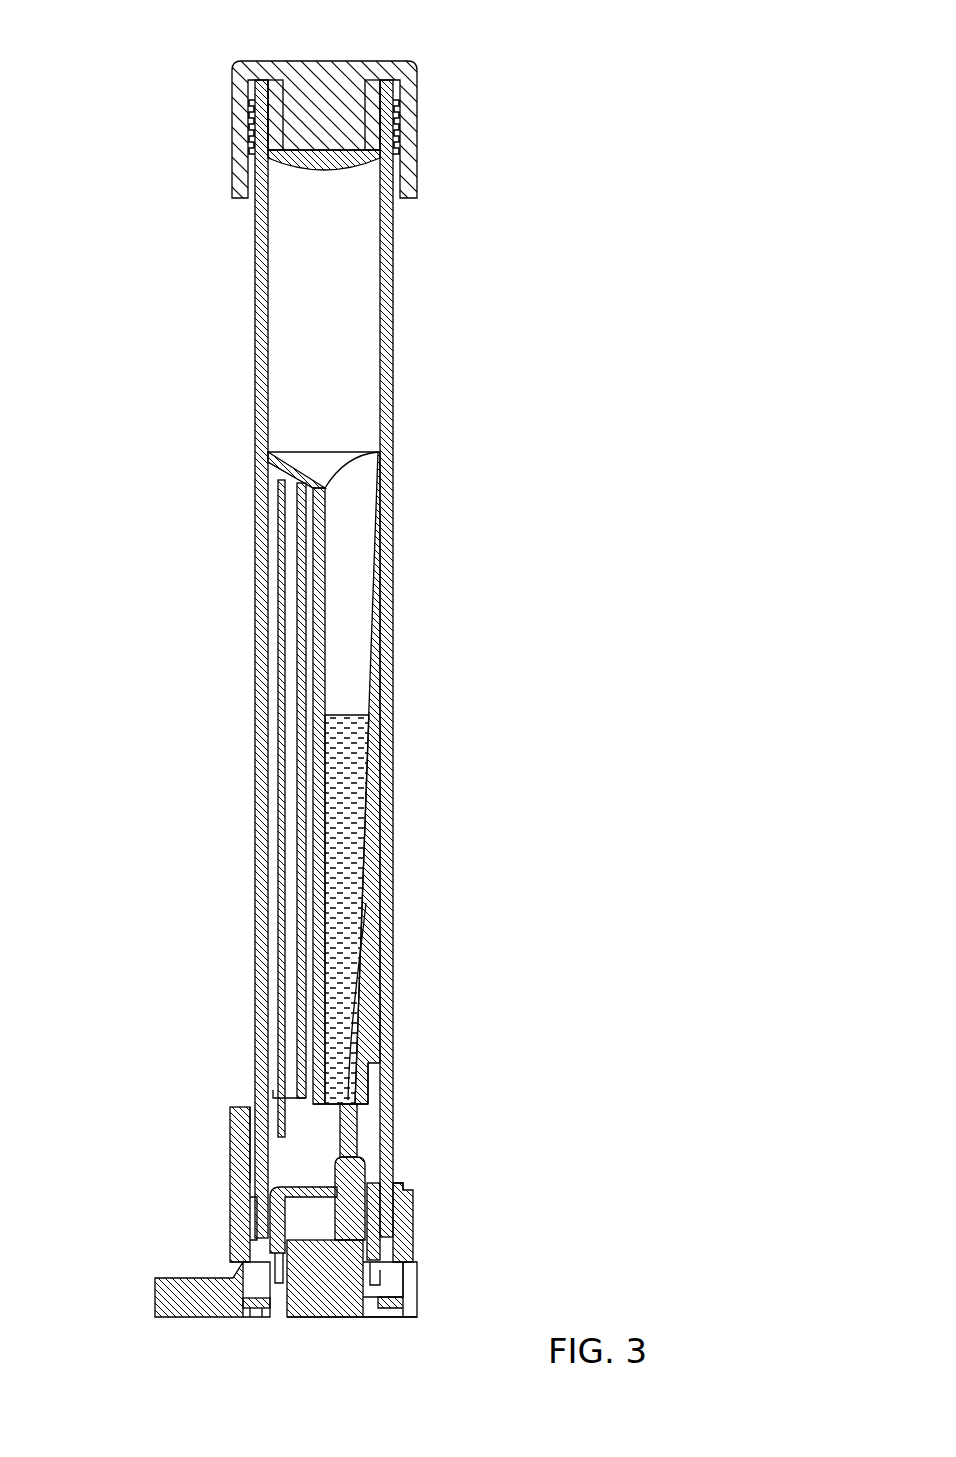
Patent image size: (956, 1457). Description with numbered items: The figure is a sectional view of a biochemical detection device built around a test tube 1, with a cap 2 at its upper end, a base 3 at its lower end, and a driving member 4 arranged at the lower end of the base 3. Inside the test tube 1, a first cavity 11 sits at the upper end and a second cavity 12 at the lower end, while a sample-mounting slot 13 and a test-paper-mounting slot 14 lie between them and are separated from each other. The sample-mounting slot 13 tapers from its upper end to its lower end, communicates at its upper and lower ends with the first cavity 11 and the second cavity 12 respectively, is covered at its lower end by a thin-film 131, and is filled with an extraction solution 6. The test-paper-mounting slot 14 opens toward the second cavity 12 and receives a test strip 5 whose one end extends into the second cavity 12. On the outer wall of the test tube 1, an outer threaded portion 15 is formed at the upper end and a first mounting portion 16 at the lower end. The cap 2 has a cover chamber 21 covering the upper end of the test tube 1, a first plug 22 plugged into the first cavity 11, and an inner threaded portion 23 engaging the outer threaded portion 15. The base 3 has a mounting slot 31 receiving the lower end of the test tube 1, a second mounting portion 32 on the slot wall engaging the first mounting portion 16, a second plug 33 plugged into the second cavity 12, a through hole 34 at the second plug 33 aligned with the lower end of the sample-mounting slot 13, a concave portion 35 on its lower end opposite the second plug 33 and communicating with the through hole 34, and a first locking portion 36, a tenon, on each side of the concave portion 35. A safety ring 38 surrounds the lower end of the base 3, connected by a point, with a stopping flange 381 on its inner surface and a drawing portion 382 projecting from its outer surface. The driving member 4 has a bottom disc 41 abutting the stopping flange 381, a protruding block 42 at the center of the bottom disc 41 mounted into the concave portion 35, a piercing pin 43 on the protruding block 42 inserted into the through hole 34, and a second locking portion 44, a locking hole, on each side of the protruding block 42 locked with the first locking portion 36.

The test tube 1 is at (260, 352).
The cap 2 is at (335, 95).
The base 3 is at (240, 1250).
The driving member 4 is at (398, 1330).
The test strip 5 is at (283, 680).
The extraction solution 6 is at (350, 805).
The first cavity 11 is at (385, 270).
The second cavity 12 is at (377, 1075).
The sample-mounting slot 13 is at (375, 598).
The test-paper-mounting slot 14 is at (267, 483).
The outer threaded portion 15 is at (393, 137).
The first mounting portion 16 is at (393, 1183).
The cover chamber 21 is at (253, 173).
The first plug 22 is at (280, 90).
The inner threaded portion 23 is at (253, 128).
The mounting slot 31 is at (235, 1215).
The second mounting portion 32 is at (250, 1180).
The second plug 33 is at (290, 1185).
The through hole 34 is at (372, 1190).
The concave portion 35 is at (410, 1245).
The first locking portion 36 is at (380, 1280).
The safety ring 38 is at (413, 1308).
The bottom disc 41 is at (262, 1318).
The protruding block 42 is at (337, 1312).
The piercing pin 43 is at (360, 1158).
The second locking portion 44 is at (277, 1318).
The thin-film 131 is at (366, 903).
The stopping flange 381 is at (243, 1317).
The drawing portion 382 is at (153, 1302).